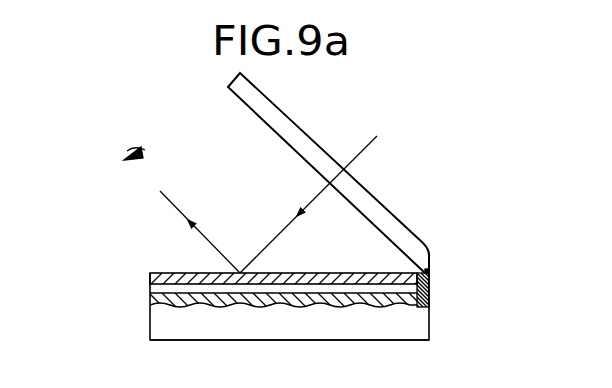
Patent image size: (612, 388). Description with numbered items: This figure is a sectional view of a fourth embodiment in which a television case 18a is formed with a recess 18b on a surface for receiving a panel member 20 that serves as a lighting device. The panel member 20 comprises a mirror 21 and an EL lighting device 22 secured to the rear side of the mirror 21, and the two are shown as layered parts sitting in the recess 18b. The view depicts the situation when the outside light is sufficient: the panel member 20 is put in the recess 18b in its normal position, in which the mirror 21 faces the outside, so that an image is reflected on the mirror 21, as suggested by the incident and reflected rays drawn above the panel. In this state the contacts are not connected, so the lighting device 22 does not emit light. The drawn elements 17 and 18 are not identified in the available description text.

The lid / cover plate 17 is at (377, 204).
The base plate 18 is at (369, 346).
The television case 18a is at (217, 335).
The recess 18b is at (430, 289).
The panel member 20 is at (254, 276).
The mirror 21 is at (172, 273).
The EL lighting device 22 is at (158, 289).